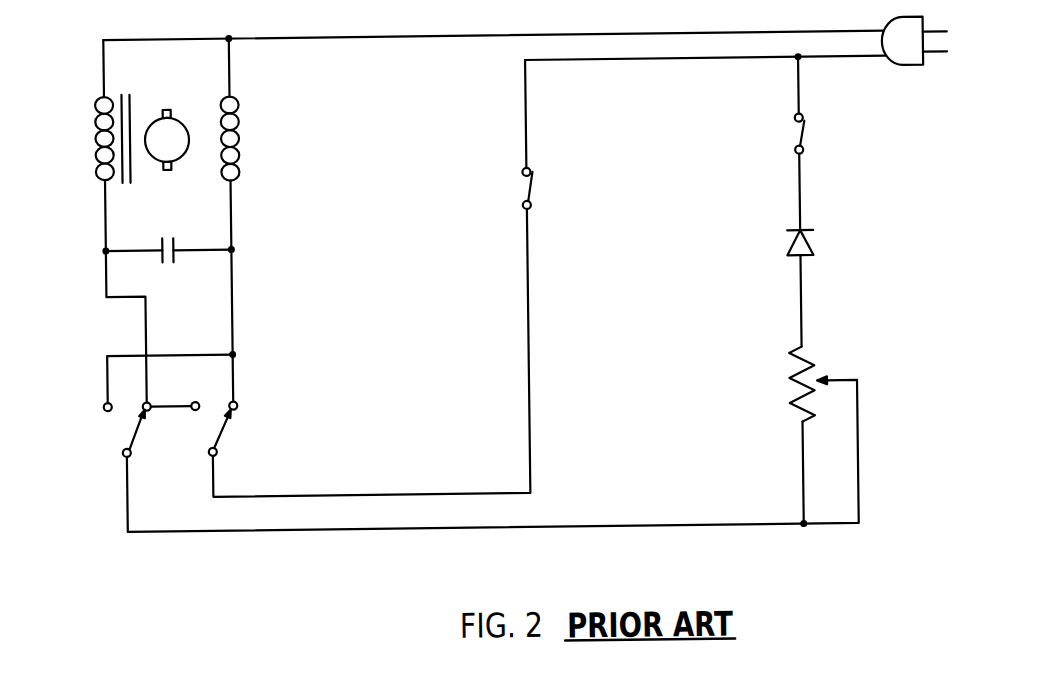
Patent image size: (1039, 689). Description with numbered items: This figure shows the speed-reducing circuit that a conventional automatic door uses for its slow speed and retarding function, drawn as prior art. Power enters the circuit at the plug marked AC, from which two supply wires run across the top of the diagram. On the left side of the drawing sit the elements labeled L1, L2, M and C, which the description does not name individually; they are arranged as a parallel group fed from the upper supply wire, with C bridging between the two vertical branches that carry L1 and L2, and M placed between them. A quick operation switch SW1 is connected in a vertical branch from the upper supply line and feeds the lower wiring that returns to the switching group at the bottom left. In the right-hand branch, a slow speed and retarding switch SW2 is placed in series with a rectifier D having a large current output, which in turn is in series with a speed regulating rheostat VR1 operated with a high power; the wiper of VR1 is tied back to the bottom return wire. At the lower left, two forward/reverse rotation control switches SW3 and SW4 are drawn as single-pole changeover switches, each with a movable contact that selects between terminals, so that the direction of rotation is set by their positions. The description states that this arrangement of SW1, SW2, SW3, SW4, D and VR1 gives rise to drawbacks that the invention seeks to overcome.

The first coil (inductor) of transformer L1 is at (245, 138).
The second coil (inductor) of transformer L2 is at (96, 139).
The motor M is at (167, 140).
The capacitor C is at (167, 237).
The quick operation switch SW1 is at (551, 188).
The slow speed and retarding switch SW2 is at (827, 133).
The forward/reverse rotation control switch SW3 is at (235, 421).
The forward/reverse rotation control switch SW4 is at (140, 421).
The rectifier D is at (811, 243).
The speed regulating rheostat VR1 is at (784, 384).
The AC power plug AC is at (937, 56).